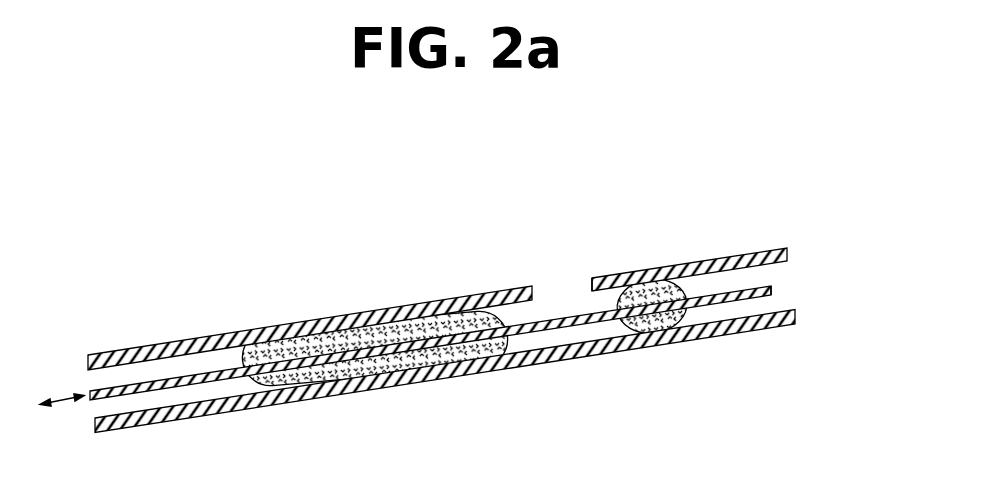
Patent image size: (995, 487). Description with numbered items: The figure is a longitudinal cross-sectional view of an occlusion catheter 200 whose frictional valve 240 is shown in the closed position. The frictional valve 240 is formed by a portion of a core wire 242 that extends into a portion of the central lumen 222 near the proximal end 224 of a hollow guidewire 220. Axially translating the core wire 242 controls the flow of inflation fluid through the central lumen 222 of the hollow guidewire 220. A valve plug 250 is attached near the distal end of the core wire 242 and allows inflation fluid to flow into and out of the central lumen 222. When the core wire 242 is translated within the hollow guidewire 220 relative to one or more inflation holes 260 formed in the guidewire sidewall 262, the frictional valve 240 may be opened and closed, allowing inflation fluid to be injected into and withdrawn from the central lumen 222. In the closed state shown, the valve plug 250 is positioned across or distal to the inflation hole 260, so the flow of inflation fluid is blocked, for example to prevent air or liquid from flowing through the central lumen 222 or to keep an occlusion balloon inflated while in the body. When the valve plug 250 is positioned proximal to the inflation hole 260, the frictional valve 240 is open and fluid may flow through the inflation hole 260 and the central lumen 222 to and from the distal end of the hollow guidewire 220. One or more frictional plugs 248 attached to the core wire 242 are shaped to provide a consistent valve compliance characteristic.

The occlusion catheter 200 is at (125, 166).
The hollow guidewire 220 is at (723, 334).
The central lumen 222 is at (763, 275).
The proximal end 224 is at (88, 357).
The frictional valve 240 is at (288, 293).
The core wire 242 is at (166, 389).
The frictional plugs 248 is at (512, 339).
The valve plug 250 is at (693, 337).
The inflation holes 260 is at (578, 285).
The guidewire sidewall 262 is at (662, 266).